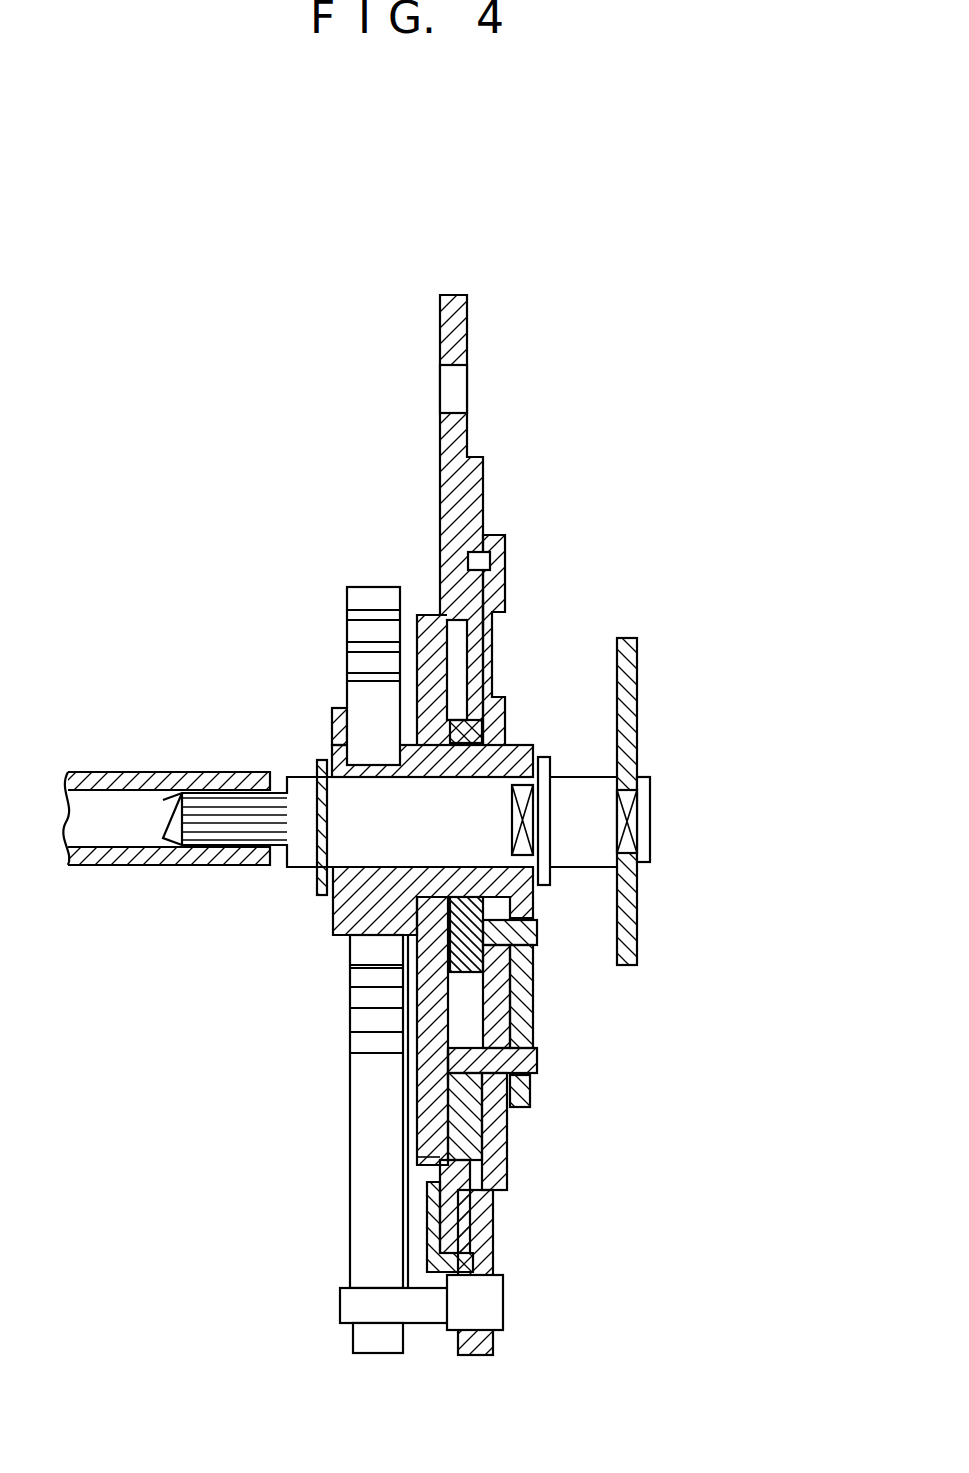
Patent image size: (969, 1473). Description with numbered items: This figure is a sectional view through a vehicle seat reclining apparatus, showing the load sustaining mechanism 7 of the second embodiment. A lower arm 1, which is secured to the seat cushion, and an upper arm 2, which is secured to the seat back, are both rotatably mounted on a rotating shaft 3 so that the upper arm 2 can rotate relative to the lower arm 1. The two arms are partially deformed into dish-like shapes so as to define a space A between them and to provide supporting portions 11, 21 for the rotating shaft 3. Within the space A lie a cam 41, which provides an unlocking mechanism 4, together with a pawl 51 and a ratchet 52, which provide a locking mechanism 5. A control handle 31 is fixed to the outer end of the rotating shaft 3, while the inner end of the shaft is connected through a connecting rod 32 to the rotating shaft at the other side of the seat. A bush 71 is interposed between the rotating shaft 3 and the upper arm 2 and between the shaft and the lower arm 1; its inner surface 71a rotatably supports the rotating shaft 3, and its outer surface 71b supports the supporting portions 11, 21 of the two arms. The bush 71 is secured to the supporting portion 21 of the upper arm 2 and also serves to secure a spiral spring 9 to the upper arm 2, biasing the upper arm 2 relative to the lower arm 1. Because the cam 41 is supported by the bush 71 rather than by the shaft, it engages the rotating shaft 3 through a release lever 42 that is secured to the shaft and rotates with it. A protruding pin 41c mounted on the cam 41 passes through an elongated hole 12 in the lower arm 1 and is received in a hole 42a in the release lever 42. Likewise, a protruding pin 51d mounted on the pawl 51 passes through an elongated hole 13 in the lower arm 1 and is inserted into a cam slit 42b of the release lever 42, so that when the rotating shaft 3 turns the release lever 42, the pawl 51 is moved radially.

The lower arm 1 is at (457, 703).
The upper arm 2 is at (462, 323).
The supporting portion 21 is at (433, 658).
The rotating shaft 3 is at (355, 818).
The control handle 31 is at (638, 652).
The connecting rod 32 is at (140, 853).
The unlocking mechanism 4 is at (598, 1051).
The cam 41 is at (443, 963).
The protruding pin 41c is at (535, 950).
The release lever 42 is at (523, 1015).
The hole 42a is at (537, 937).
The cam slit 42b is at (545, 1065).
The locking mechanism 5 is at (345, 1160).
The pawl 51 is at (463, 1118).
The protruding pin 51d is at (542, 1060).
The ratchet 52 is at (430, 1208).
The load sustaining mechanism 7 is at (312, 697).
The bush 71 is at (403, 900).
The inner surface 71a is at (330, 750).
The outer surface 71b is at (522, 818).
The spiral spring 9 is at (360, 597).
The supporting portion 11 is at (495, 730).
The elongated hole 12 is at (535, 960).
The elongated hole 13 is at (430, 1065).
The space A is at (487, 620).